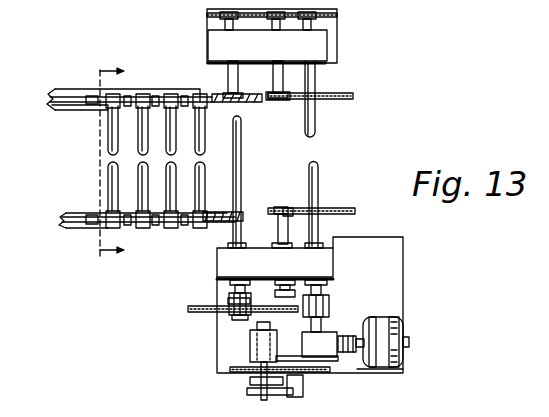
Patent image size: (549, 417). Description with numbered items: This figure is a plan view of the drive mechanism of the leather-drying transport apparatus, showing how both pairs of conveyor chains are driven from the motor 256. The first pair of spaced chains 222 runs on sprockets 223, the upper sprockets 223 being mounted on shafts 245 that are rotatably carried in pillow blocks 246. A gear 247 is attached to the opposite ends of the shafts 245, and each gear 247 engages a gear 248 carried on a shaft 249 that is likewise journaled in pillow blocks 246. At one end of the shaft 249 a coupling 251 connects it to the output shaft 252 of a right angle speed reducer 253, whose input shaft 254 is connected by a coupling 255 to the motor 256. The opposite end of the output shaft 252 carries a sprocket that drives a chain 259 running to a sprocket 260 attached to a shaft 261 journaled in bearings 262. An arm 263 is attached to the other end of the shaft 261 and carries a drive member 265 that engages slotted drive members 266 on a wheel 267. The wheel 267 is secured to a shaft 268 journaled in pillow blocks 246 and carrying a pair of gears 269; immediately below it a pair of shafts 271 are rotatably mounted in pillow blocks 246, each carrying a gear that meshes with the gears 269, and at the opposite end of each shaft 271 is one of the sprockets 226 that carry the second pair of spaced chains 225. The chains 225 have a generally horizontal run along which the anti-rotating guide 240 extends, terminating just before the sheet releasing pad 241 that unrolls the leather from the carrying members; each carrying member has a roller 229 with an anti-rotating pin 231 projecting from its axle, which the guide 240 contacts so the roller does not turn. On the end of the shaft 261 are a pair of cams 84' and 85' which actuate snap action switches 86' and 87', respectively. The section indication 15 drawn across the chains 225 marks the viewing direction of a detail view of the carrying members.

The section line 15 is at (122, 161).
The first pair of spaced chains 222 is at (342, 100).
The sprockets 223 is at (290, 94).
The second pair of spaced chains 225 is at (100, 97).
The sprockets 226 is at (205, 104).
The roller 229 is at (108, 138).
The anti-rotating member 231 is at (168, 229).
The anti-rotating guide 240 is at (68, 232).
The sheet releasing pad 241 is at (272, 288).
The shafts 245 is at (276, 80).
The pillow blocks 246 is at (305, 191).
The gear 247 is at (282, 20).
The gear 248 is at (337, 12).
The shaft 249 is at (319, 178).
The coupling 251 is at (324, 308).
The output shaft 252 is at (330, 326).
The right angle speed reducer 253 is at (319, 344).
The input shaft 254 is at (341, 356).
The coupling 255 is at (352, 354).
The motor 256 is at (409, 326).
The chain 259 is at (307, 350).
The sprocket 260 is at (232, 370).
The shaft 261 is at (250, 356).
The bearings 262 is at (252, 340).
The arm 263 is at (235, 323).
The drive member 265 is at (232, 318).
The slotted drive members 266 is at (192, 308).
The wheel 267 is at (212, 305).
The shaft 268 is at (222, 27).
The gears 269 is at (208, 17).
The shafts 271 is at (227, 90).
The cam 84' is at (245, 384).
The cam 85' is at (258, 394).
The snap action switch 86' is at (309, 396).
The snap action switch 87' is at (283, 406).